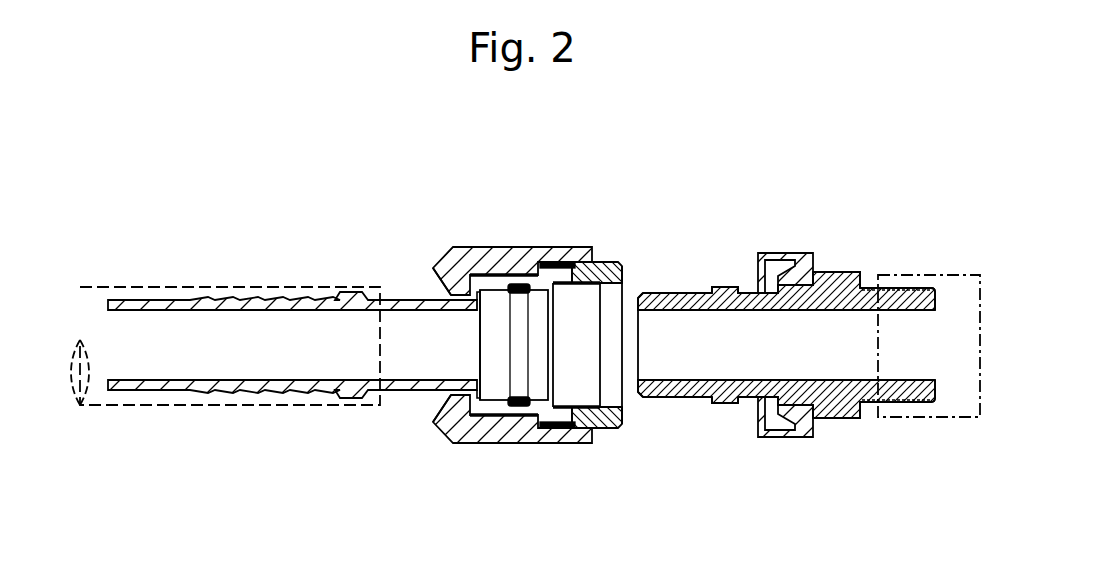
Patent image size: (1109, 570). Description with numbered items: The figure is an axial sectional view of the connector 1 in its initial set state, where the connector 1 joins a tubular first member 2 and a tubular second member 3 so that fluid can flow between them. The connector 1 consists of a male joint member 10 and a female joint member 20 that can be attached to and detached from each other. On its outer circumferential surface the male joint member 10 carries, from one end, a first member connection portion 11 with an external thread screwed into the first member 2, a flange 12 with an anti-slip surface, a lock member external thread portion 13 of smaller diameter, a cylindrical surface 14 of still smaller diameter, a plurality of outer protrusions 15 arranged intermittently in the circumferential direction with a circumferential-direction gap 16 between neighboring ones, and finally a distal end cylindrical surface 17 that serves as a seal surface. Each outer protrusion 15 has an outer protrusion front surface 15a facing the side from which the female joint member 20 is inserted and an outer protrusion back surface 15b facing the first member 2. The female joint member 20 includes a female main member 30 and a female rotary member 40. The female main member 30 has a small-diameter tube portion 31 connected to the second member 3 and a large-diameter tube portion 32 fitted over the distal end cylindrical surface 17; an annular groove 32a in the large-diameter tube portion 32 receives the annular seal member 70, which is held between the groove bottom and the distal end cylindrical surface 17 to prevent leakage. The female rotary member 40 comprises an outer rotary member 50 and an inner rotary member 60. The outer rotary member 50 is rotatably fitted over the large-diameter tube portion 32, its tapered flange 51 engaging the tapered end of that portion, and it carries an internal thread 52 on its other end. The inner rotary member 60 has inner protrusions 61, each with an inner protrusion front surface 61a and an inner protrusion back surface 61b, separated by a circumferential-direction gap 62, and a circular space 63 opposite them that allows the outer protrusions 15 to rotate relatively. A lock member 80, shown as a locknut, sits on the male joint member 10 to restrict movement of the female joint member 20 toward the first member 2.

The connector 1 is at (223, 233).
The first member 2 is at (945, 275).
The second member 3 is at (110, 287).
The male joint member 10 is at (870, 270).
The first member connection portion 11 is at (887, 405).
The flange 12 is at (843, 418).
The lock member external thread portion 13 is at (797, 405).
The cylindrical surface 14 is at (762, 437).
The outer protrusions 15 is at (724, 287).
The outer protrusion front surface 15a is at (663, 293).
The outer protrusion back surface 15b is at (734, 288).
The circumferential-direction gap 16 is at (727, 403).
The distal end cylindrical surface 17 is at (643, 292).
The female joint member 20 is at (408, 288).
The female main member 30 is at (297, 300).
The small-diameter tube portion 31 is at (250, 392).
The large-diameter tube portion 32 is at (528, 412).
The annular groove 32a is at (510, 398).
The female rotary member 40 is at (638, 178).
The outer rotary member 50 is at (576, 248).
The flange 51 is at (440, 292).
The internal thread 52 is at (566, 270).
The inner rotary member 60 is at (604, 260).
The inner protrusions 61 is at (617, 398).
The inner protrusion front surface 61a is at (620, 400).
The inner protrusion back surface 61b is at (592, 405).
The circumferential-direction gap 62 is at (572, 288).
The circular space 63 is at (572, 402).
The annular seal member 70 is at (524, 288).
The lock member 80 is at (802, 250).